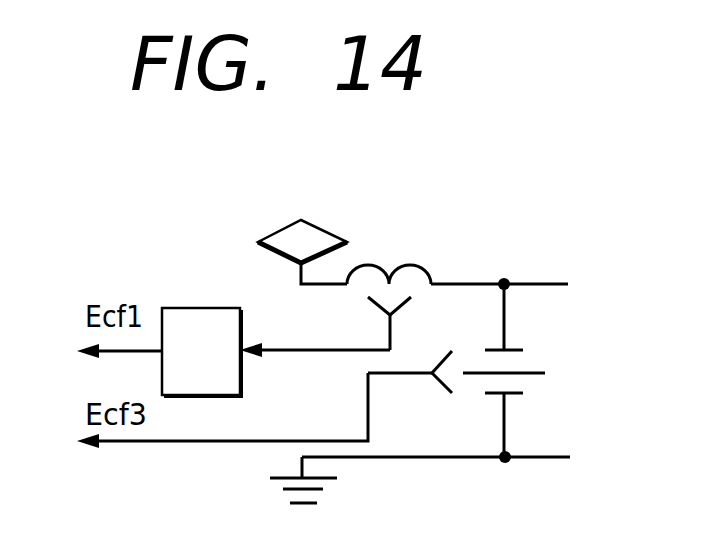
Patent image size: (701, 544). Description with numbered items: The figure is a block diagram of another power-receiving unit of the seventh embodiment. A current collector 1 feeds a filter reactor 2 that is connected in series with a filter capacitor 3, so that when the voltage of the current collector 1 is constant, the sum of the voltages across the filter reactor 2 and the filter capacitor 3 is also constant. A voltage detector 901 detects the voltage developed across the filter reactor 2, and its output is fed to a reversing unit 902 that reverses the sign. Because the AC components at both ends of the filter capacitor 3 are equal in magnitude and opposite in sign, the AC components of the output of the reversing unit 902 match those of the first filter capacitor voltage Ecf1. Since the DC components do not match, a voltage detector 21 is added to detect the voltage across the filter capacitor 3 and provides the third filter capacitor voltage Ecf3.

The current collector 1 is at (322, 230).
The filter reactor 2 is at (410, 263).
The filter capacitor 3 is at (517, 348).
The voltage detector 21 is at (440, 385).
The voltage detector 901 is at (376, 306).
The reversing unit 902 is at (192, 308).